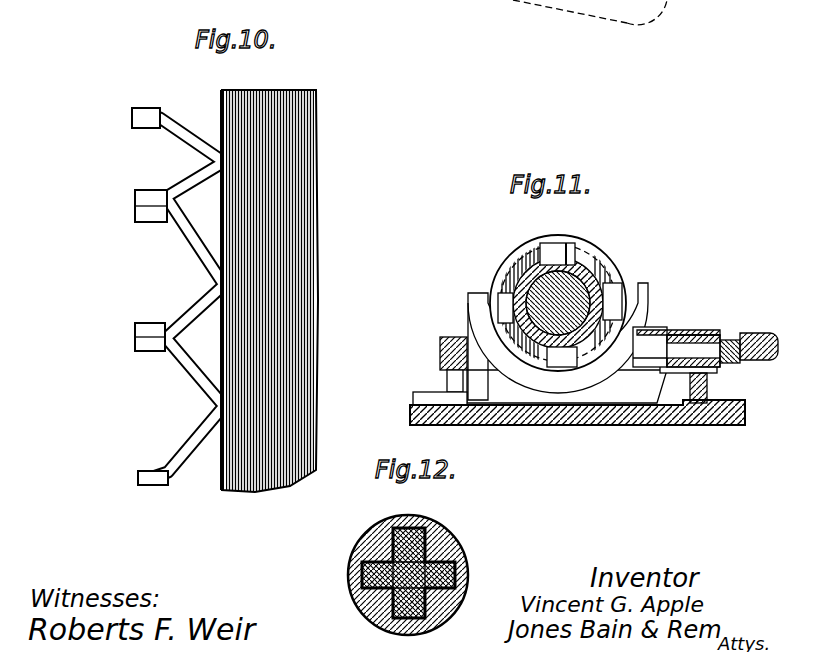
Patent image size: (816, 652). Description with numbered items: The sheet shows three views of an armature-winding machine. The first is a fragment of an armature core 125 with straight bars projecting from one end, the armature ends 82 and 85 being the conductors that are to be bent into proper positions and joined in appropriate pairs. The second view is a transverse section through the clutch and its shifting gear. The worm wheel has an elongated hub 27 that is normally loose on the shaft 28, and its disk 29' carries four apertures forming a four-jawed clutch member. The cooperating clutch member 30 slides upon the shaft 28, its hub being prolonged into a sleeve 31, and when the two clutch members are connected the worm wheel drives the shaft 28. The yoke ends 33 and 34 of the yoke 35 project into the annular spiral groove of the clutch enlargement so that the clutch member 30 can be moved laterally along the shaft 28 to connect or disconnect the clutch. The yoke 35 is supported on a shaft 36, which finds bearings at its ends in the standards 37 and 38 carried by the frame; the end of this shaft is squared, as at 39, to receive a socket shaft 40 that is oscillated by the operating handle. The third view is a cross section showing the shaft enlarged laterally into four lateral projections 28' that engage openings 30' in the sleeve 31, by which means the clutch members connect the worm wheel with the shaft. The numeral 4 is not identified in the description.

In FIG. 10, the armature core 125 is at (308, 205).
In FIG. 10, the armature end 85 is at (140, 197).
In FIG. 10, the armature end 82 is at (145, 218).
In FIG. 11, the elongated hub 27 is at (596, 275).
In FIG. 11, the shaft 28 is at (592, 295).
In FIG. 11, the disk 29' is at (596, 290).
In FIG. 11, the cooperating clutch member 30 is at (558, 298).
In FIG. 12, the cooperating clutch member 30 is at (426, 575).
In FIG. 11, the yoke end 33 is at (468, 302).
In FIG. 11, the yoke end 34 is at (660, 314).
In FIG. 11, the yoke 35 is at (592, 374).
In FIG. 11, the shaft 36 is at (668, 367).
In FIG. 11, the standard 37 is at (450, 338).
In FIG. 11, the standard 38 is at (708, 332).
In FIG. 11, the squared end 39 is at (735, 364).
In FIG. 11, the socket shaft 40 is at (762, 334).
In FIG. 12, the lateral projections 28' is at (408, 554).
In FIG. 12, the sleeve 31 is at (425, 560).
In FIG. 12, the armature 4 is at (430, 570).
In FIG. 12, the openings 30' is at (487, 581).